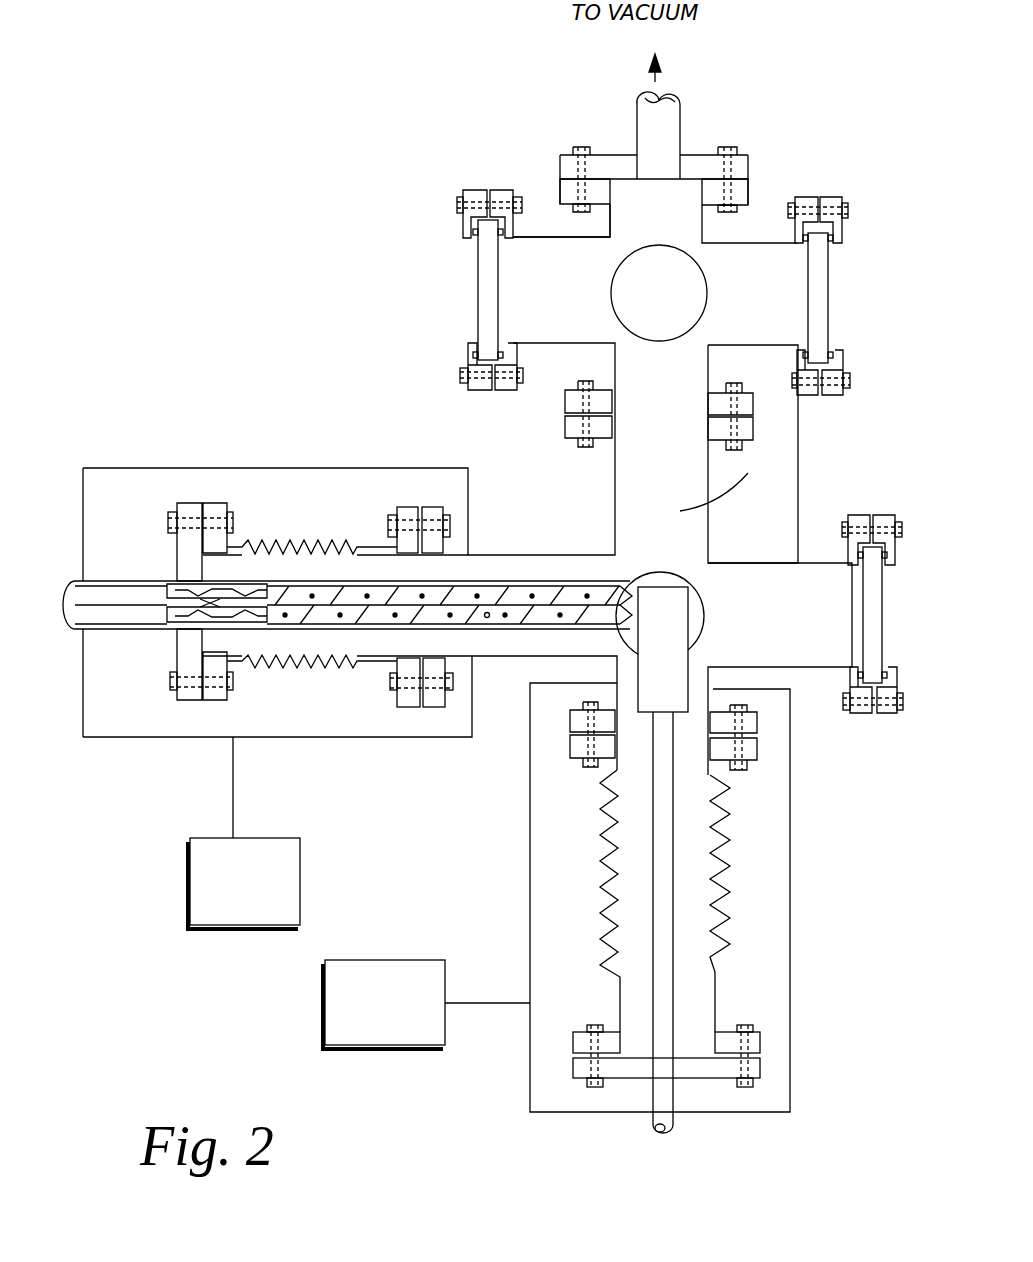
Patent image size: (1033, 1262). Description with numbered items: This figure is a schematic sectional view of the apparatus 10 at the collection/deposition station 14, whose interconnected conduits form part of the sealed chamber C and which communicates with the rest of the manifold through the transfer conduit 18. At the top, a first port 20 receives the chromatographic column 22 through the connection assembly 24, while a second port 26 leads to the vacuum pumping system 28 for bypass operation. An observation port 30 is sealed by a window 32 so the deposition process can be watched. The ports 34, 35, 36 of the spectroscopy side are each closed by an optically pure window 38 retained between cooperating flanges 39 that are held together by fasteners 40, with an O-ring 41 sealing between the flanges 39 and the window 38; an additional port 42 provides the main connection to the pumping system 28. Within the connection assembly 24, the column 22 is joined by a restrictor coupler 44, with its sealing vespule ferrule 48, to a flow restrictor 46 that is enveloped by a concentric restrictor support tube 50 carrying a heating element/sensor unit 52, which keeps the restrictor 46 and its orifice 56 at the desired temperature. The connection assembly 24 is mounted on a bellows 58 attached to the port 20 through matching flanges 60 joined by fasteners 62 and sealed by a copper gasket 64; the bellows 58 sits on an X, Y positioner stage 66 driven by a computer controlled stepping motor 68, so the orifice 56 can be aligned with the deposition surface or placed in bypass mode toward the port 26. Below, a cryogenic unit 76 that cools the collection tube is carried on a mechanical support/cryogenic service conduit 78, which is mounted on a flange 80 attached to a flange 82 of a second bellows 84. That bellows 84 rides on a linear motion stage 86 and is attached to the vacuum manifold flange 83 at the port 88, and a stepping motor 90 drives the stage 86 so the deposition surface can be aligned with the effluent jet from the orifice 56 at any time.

The apparatus 10 is at (286, 259).
The collection/deposition station 14 is at (716, 532).
The transfer conduit 18 is at (710, 467).
The first port 20 is at (525, 556).
The chromatographic column 22 is at (123, 468).
The connection assembly 24 is at (167, 632).
The second port 26 is at (704, 584).
The vacuum pumping system 28 is at (631, 102).
The observation port 30 is at (800, 563).
The window 32 is at (876, 614).
The port 34 is at (767, 243).
The port 35 is at (543, 343).
The port 36 is at (688, 335).
The optically pure window 38 is at (478, 300).
The cooperating flanges 39 is at (503, 190).
The fasteners 40 is at (457, 207).
The O-ring 41 is at (498, 235).
The additional port 42 is at (608, 221).
The restrictor coupler 44 is at (196, 600).
The flow restrictor 46 is at (357, 615).
The sealing vespule ferrule 48 is at (207, 605).
The restrictor support tube 50 is at (492, 582).
The heating element/sensor unit 52 is at (487, 622).
The orifice 56 is at (595, 625).
The bellows 58 is at (297, 540).
The matching flanges 60 is at (433, 505).
The fasteners 62 is at (398, 508).
The copper gasket 64 is at (430, 670).
The X, Y positioner stage 66 is at (345, 468).
The stepping motor 68 is at (244, 883).
The cryogenic unit 76 is at (655, 587).
The mechanical support/cryogenic service conduit 78 is at (680, 980).
The flange 80 is at (750, 1070).
The flange 82 is at (760, 1042).
The vacuum manifold flange 83 is at (757, 724).
The bellows 84 is at (730, 815).
The linear motion stage 86 is at (792, 884).
The port 88 is at (703, 680).
The stepping motor 90 is at (426, 1004).
The sealed chamber C is at (720, 480).